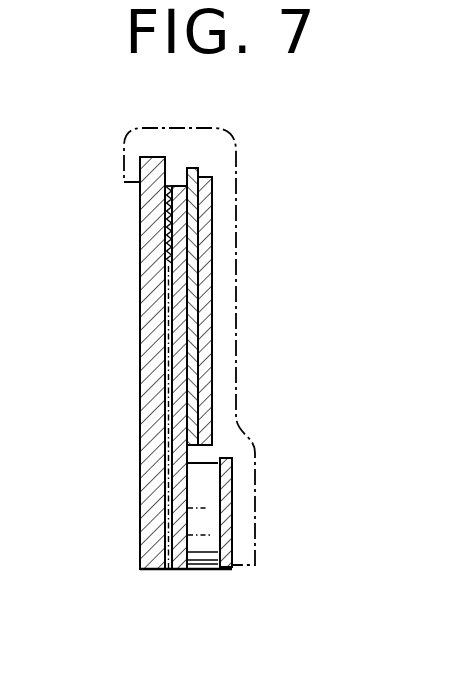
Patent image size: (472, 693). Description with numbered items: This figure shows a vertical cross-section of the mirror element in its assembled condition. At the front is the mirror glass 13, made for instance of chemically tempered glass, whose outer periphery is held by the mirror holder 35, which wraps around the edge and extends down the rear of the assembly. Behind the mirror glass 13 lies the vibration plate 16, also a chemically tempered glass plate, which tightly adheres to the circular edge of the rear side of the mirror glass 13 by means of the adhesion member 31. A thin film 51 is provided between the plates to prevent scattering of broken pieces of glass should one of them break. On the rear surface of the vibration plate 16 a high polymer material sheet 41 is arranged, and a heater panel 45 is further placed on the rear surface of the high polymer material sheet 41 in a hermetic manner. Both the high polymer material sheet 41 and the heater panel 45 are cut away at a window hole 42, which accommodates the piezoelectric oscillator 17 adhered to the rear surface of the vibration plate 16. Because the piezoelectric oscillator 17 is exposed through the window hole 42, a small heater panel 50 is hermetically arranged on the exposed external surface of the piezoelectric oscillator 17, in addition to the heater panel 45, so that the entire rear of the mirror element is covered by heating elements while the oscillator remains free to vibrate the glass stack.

The mirror holder 35 is at (240, 162).
The mirror glass 13 is at (141, 233).
The vibration plate 16 is at (168, 244).
The thin film 51 is at (168, 413).
The adhesion member 31 is at (208, 211).
The high polymer material sheet 41 is at (190, 293).
The heater panel 45 is at (200, 343).
The window hole 42 is at (197, 455).
The piezoelectric oscillator 17 is at (207, 483).
The small heater panel 50 is at (223, 536).